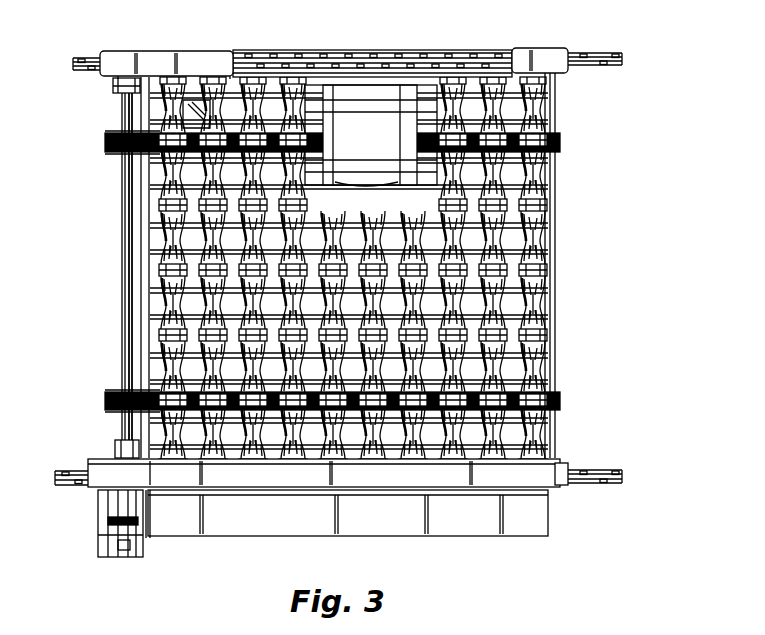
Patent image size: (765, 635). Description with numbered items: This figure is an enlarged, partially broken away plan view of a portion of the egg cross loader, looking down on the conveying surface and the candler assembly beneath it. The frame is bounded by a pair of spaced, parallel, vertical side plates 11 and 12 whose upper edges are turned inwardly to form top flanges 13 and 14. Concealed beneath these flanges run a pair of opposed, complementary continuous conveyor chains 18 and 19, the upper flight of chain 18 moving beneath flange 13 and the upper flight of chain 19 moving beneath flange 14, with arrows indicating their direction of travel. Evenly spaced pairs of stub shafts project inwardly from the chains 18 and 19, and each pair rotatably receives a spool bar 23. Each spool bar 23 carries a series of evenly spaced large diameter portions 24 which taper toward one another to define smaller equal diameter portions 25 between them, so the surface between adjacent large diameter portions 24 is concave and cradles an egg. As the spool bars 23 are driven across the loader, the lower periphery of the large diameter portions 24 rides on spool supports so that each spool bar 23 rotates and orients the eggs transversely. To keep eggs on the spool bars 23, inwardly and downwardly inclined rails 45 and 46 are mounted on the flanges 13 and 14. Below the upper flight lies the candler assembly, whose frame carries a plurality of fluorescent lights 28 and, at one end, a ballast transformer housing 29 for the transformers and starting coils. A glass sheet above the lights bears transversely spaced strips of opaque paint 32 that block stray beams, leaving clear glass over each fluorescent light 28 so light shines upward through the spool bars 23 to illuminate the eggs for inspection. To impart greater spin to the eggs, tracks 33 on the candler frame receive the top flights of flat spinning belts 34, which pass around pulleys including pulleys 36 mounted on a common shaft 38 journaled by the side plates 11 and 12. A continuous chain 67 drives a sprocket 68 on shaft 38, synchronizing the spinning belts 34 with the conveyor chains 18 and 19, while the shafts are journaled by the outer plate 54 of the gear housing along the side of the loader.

The side plate 11 is at (562, 488).
The side plate 12 is at (311, 130).
The top flange 13 is at (146, 497).
The top flange 14 is at (518, 28).
The conveyor chain 18 is at (63, 470).
The conveyor chain 19 is at (95, 60).
The spool bar 23 is at (168, 172).
The large diameter portion 24 is at (170, 207).
The equal diameter portion 25 is at (152, 236).
The fluorescent light 28 is at (192, 104).
The ballast transformer housing 29 is at (343, 528).
The strip of opaque paint 32 is at (405, 133).
The track 33 is at (148, 130).
The spinning belt 34 is at (108, 147).
The pulley 36 is at (108, 136).
The shaft 38 is at (125, 300).
The rail 45 is at (303, 484).
The rail 46 is at (190, 56).
The outer plate 54 is at (143, 560).
The continuous chain 67 is at (112, 521).
The sprocket 68 is at (116, 544).